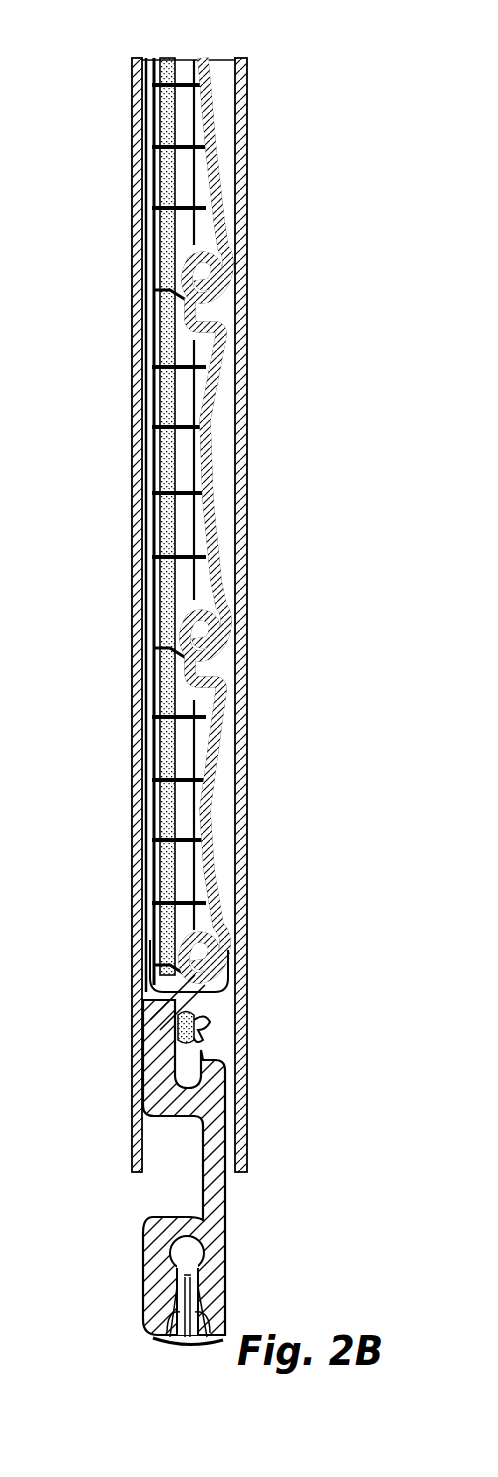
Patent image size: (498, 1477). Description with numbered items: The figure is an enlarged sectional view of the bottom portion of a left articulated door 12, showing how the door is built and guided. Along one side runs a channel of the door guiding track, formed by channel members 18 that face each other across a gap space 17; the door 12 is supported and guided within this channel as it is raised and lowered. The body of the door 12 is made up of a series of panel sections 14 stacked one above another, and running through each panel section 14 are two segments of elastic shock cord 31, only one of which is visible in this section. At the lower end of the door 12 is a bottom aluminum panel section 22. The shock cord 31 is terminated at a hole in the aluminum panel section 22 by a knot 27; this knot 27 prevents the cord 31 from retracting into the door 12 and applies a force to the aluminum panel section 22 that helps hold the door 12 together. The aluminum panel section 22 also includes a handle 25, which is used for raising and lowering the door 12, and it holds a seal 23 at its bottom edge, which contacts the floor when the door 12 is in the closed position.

The articulated door 12 is at (200, 50).
The panel section 14 is at (212, 458).
The gap space 17 is at (222, 425).
The channel member 18 is at (131, 280).
The bottom aluminum panel section 22 is at (210, 1210).
The seal 23 is at (150, 1347).
The handle 25 is at (180, 1185).
The knot 27 is at (177, 1040).
The elastic shock cord 31 is at (173, 880).